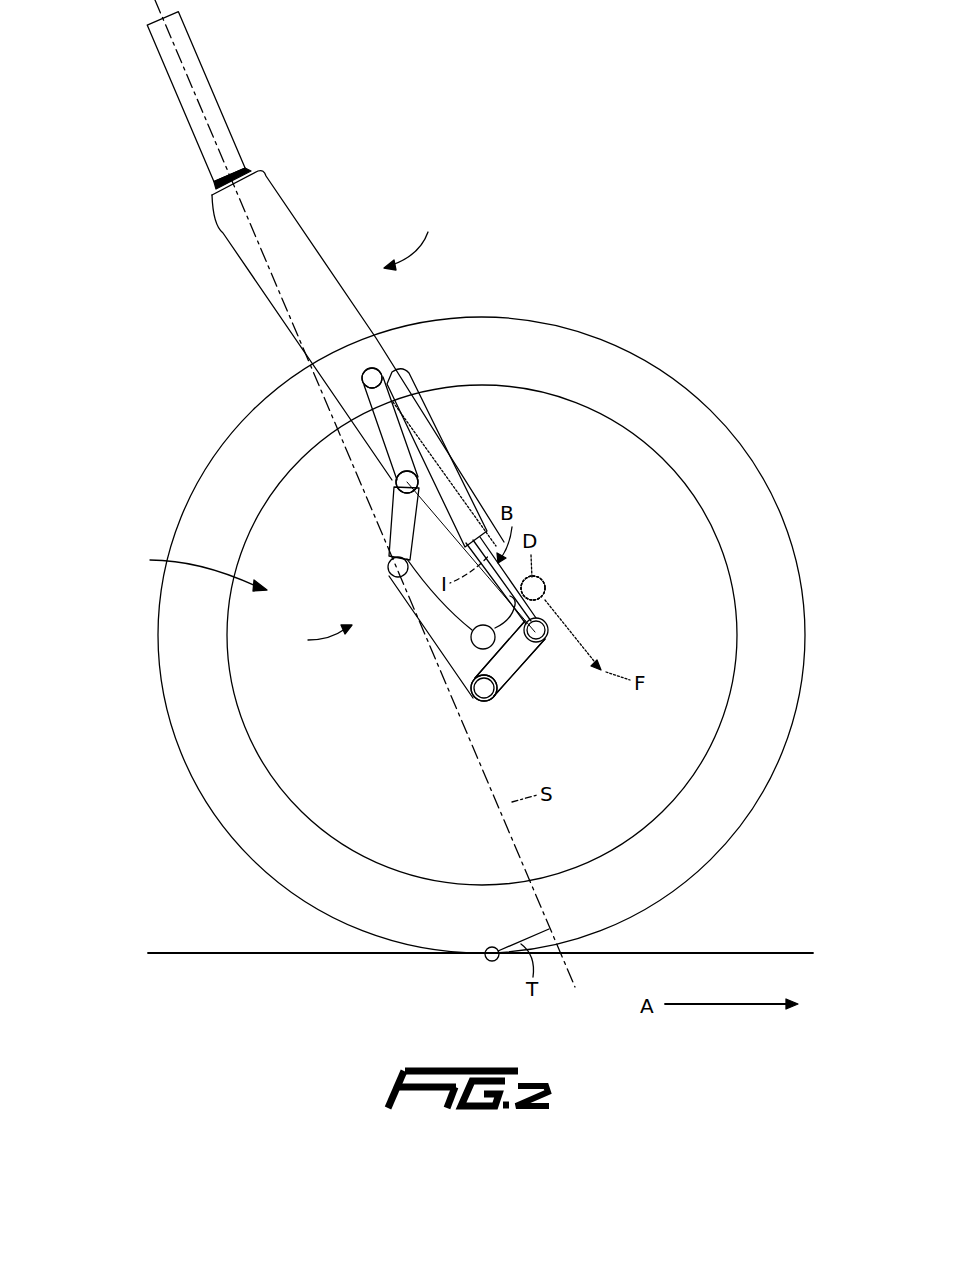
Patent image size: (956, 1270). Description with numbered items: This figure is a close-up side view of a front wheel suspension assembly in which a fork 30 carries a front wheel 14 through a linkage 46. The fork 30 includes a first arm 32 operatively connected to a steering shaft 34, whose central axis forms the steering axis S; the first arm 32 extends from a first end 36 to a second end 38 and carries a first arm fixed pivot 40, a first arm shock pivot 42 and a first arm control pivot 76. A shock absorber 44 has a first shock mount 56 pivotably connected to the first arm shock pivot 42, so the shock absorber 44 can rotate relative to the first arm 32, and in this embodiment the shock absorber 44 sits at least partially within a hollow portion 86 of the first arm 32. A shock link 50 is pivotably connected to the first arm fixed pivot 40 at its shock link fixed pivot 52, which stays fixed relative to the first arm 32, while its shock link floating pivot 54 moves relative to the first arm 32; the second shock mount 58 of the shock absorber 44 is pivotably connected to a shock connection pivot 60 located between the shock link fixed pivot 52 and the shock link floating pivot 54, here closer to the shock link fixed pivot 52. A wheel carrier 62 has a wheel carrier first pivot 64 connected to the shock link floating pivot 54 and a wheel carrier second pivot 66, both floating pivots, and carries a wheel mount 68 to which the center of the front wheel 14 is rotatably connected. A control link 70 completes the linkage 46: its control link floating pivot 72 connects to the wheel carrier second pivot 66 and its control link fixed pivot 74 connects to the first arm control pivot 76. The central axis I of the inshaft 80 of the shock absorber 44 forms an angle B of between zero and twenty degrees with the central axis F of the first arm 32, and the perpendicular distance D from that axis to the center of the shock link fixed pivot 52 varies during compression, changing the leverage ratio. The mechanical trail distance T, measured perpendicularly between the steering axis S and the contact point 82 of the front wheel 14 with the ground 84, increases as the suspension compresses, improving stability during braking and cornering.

The front wheel 14 is at (211, 803).
The fork 30 is at (282, 397).
The first arm 32 is at (320, 246).
The steering shaft 34 is at (196, 99).
The first end 36 is at (544, 582).
The second end 38 is at (212, 197).
The first arm fixed pivot 40 is at (536, 576).
The first arm shock pivot 42 is at (376, 369).
The shock absorber 44 is at (413, 425).
The linkage 46 is at (317, 639).
The shock link 50 is at (510, 652).
The shock link fixed pivot 52 is at (549, 597).
The shock link floating pivot 54 is at (494, 698).
The first shock mount 56 is at (362, 380).
The second shock mount 58 is at (539, 648).
The shock connection pivot 60 is at (549, 631).
The wheel carrier 62 is at (447, 635).
The wheel carrier first pivot 64 is at (487, 701).
The wheel carrier second pivot 66 is at (387, 580).
The wheel mount 68 is at (526, 641).
The control link 70 is at (400, 517).
The control link floating pivot 72 is at (388, 569).
The control link fixed pivot 74 is at (395, 483).
The first arm control pivot 76 is at (396, 479).
The inshaft 80 is at (510, 596).
The contact point 82 is at (490, 962).
The ground 84 is at (313, 955).
The hollow portion 86 is at (370, 435).